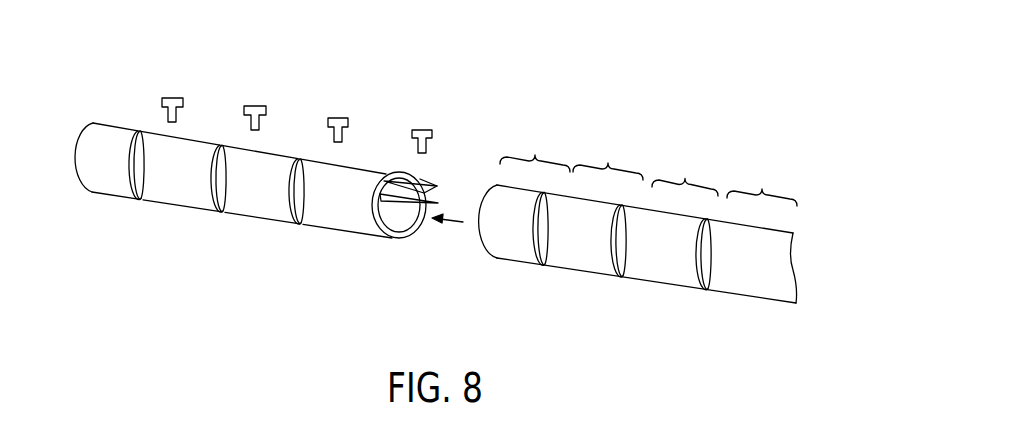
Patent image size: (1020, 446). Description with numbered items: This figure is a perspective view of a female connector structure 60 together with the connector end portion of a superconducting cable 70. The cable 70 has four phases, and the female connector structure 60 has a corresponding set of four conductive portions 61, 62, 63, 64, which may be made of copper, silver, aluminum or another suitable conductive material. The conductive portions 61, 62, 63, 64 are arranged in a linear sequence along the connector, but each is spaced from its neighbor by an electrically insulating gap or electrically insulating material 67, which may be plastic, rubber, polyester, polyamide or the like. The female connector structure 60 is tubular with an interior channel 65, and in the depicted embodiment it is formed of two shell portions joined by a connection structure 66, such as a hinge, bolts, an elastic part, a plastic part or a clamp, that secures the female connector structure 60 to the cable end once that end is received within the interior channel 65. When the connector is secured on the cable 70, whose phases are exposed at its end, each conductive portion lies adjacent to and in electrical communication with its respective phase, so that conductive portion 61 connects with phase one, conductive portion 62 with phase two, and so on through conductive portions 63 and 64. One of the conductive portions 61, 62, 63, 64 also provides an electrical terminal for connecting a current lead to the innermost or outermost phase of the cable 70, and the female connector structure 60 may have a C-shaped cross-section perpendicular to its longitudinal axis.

The female connector structure 60 is at (269, 162).
The conductive portion 61 is at (110, 194).
The conductive portion 62 is at (182, 208).
The conductive portion 63 is at (254, 222).
The conductive portion 64 is at (346, 236).
The interior channel 65 is at (398, 230).
The connection structure 66 is at (176, 96).
The electrically insulating material 67 is at (137, 202).
The superconducting cable 70 is at (596, 284).